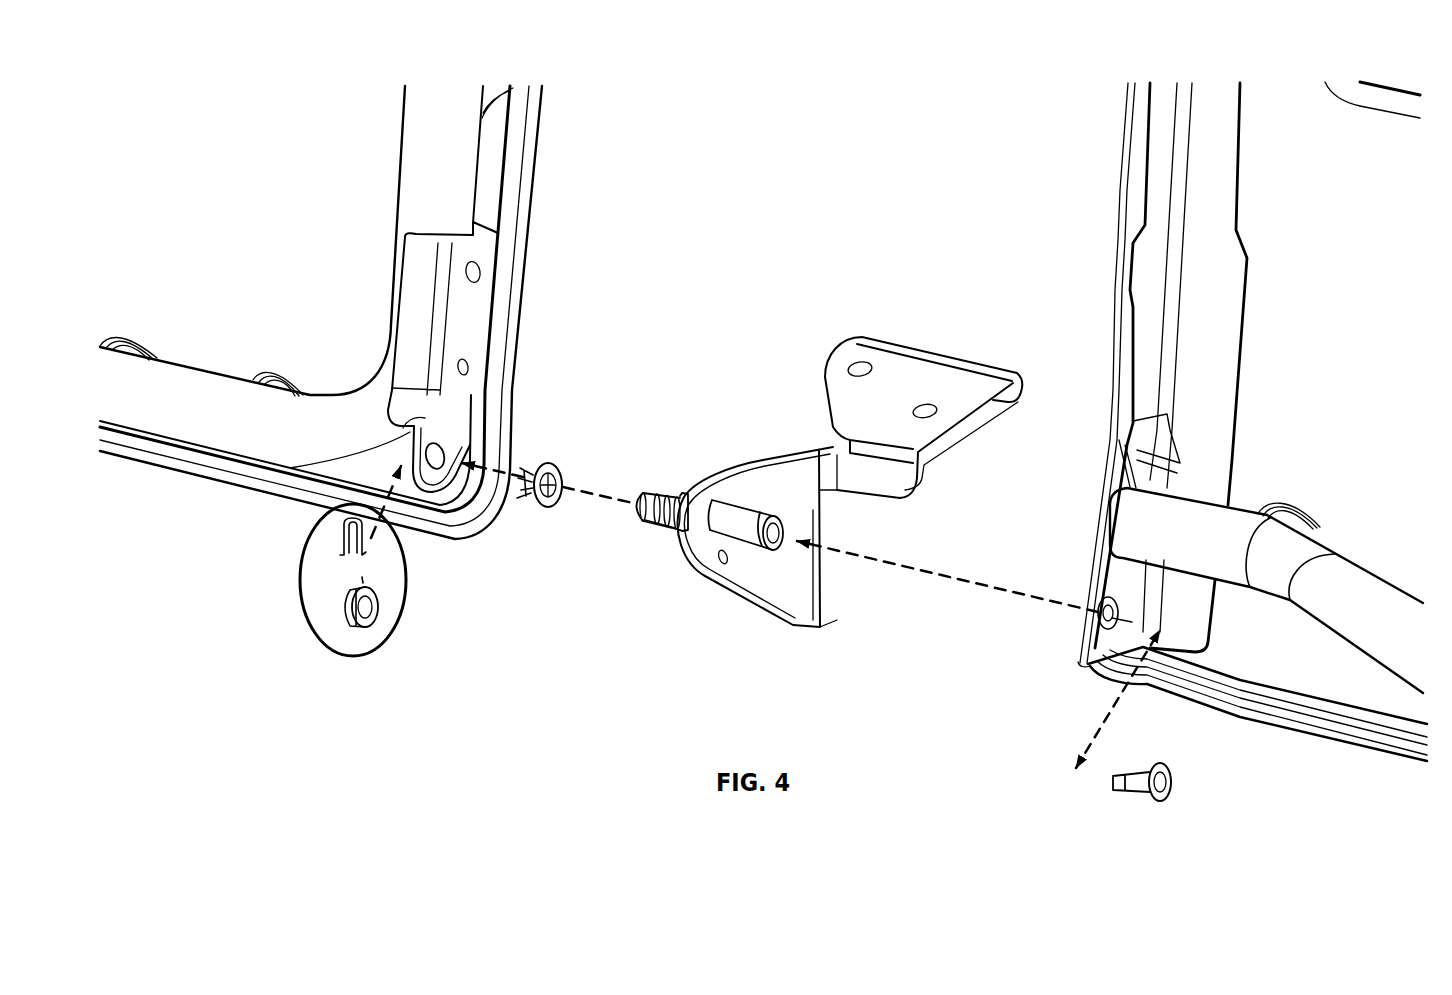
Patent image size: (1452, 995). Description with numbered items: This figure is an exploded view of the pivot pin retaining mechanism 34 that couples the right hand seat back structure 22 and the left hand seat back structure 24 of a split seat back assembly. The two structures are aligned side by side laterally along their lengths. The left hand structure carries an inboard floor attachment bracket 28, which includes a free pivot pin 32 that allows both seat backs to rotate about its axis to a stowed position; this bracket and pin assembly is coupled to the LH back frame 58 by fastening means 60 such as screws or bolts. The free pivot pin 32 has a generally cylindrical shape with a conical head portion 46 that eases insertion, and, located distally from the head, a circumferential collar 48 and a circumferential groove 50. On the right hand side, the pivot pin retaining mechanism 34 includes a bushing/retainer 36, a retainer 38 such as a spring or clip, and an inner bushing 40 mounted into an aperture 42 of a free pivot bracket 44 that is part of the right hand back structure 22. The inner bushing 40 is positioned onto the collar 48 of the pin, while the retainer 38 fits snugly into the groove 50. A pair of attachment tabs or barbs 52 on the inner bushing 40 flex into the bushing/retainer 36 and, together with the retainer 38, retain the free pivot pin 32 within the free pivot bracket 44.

The right hand seat back structure 22 is at (549, 170).
The left hand seat back structure 24 is at (1107, 187).
The inboard floor attachment bracket 28 is at (920, 372).
The free pivot pin 32 is at (745, 540).
The pivot pin retaining mechanism 34 is at (302, 638).
The bushing/retainer 36 is at (362, 641).
The retainer 38 is at (341, 538).
The inner bushing 40 is at (557, 468).
The aperture 42 is at (434, 468).
The free pivot bracket 44 is at (466, 320).
The conical head portion 46 is at (636, 504).
The circumferential collar 48 is at (683, 493).
The circumferential groove 50 is at (662, 532).
The attachment tabs or barbs 52 is at (521, 457).
The LH back frame 58 is at (1189, 438).
The fastening means 60 is at (1174, 783).